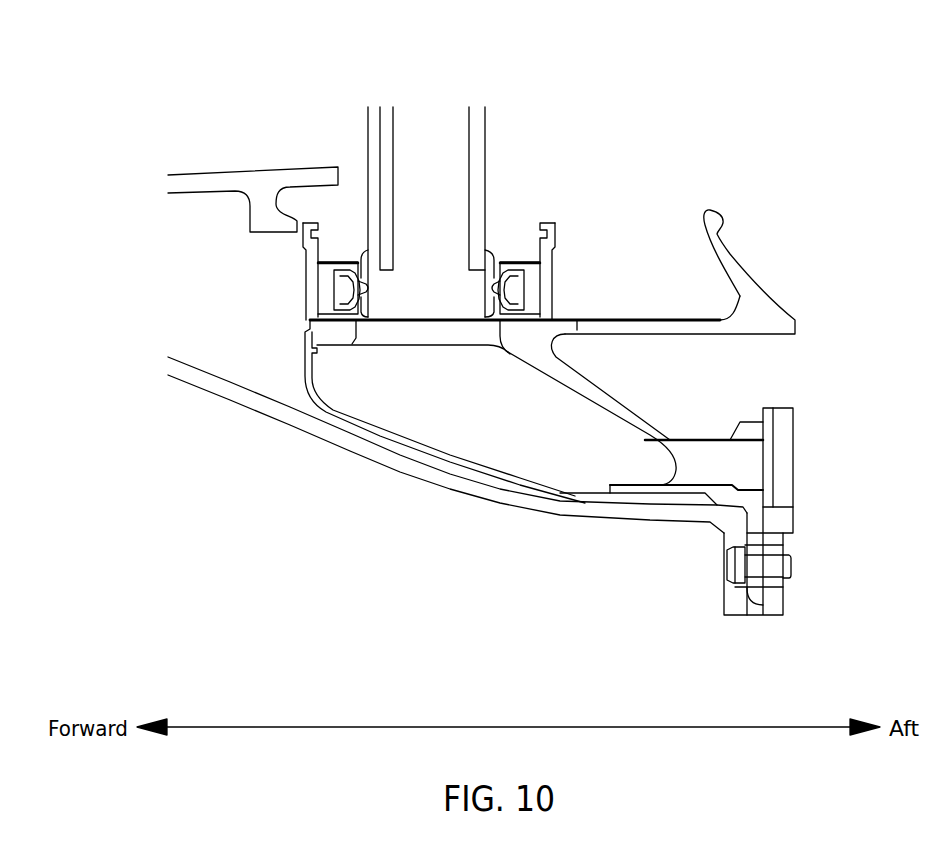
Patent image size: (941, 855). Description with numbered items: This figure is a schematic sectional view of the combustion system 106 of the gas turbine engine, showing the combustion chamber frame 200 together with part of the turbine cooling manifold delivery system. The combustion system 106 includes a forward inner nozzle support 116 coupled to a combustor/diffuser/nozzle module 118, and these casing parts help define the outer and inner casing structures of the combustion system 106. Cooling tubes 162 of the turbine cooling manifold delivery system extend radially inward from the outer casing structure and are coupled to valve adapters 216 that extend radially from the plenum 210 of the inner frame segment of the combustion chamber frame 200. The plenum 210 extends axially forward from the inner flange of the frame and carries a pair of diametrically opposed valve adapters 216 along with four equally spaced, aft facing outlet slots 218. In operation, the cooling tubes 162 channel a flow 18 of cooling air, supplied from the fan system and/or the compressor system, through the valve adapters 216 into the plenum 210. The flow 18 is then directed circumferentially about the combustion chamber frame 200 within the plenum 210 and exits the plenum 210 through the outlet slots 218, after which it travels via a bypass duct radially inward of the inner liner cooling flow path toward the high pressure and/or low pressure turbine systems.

The flow of cooling air 18 is at (432, 122).
The combustion system 106 is at (323, 44).
The forward inner nozzle support 116 is at (778, 522).
The combustor/diffuser/nozzle module 118 is at (643, 513).
The cooling tubes 162 is at (476, 140).
The combustion chamber frame 200 is at (278, 330).
The plenum 210 is at (598, 390).
The valve adapters 216 is at (552, 275).
The outlet slots 218 is at (752, 438).